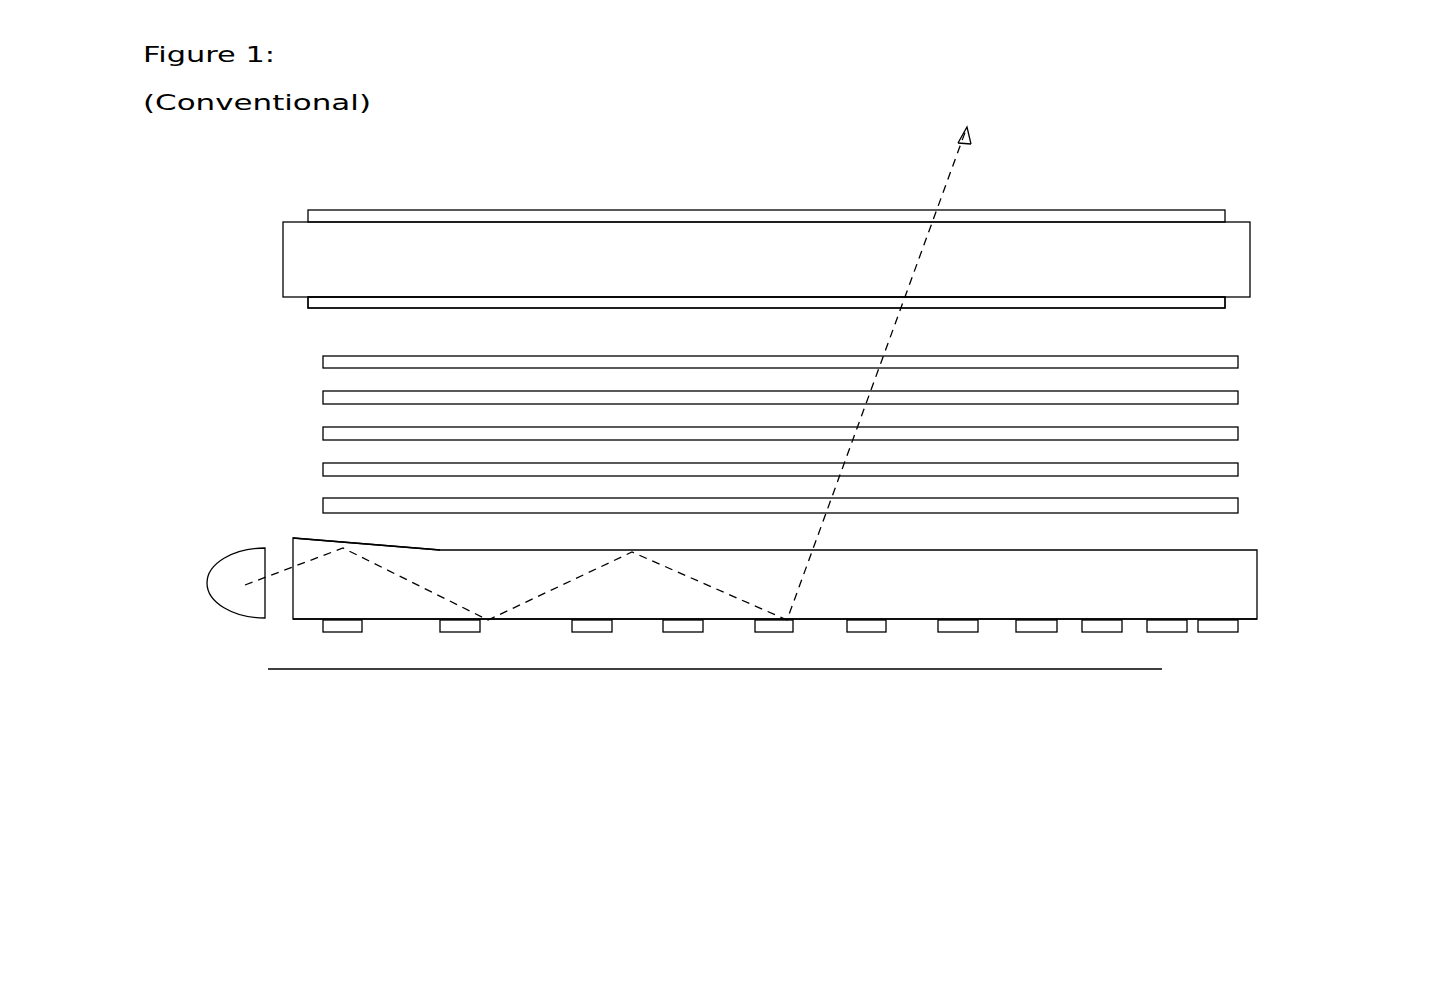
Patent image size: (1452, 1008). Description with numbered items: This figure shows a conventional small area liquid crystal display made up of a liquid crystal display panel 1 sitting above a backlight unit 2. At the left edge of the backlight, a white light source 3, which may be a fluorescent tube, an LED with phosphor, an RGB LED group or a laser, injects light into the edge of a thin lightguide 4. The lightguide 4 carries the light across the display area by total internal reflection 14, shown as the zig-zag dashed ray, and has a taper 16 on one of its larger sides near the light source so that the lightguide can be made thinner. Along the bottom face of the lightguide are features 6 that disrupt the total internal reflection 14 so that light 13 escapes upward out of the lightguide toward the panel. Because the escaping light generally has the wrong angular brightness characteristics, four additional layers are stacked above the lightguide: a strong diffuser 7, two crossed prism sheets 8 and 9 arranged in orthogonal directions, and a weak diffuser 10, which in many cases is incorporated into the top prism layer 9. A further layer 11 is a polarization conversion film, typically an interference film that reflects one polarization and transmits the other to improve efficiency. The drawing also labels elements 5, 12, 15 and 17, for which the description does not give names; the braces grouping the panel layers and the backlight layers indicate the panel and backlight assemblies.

The liquid crystal display panel 1 is at (1308, 197).
The backlight unit 2 is at (1335, 343).
The white light source 3 is at (210, 573).
The lightguide 4 is at (1130, 595).
The reflector sheet 5 is at (382, 667).
The features 6 is at (592, 630).
The strong diffuser 7 is at (323, 503).
The prism sheet 8 is at (323, 467).
The prism sheet 9 is at (323, 435).
The weak diffuser 10 is at (323, 398).
The polarization conversion film 11 is at (323, 363).
The liquid crystal panel glass 12 is at (338, 300).
The light 13 is at (1032, 180).
The total internal reflection 14 is at (537, 618).
The light ray 15 is at (837, 627).
The taper 16 is at (343, 548).
The light guide plate 17 is at (1268, 523).